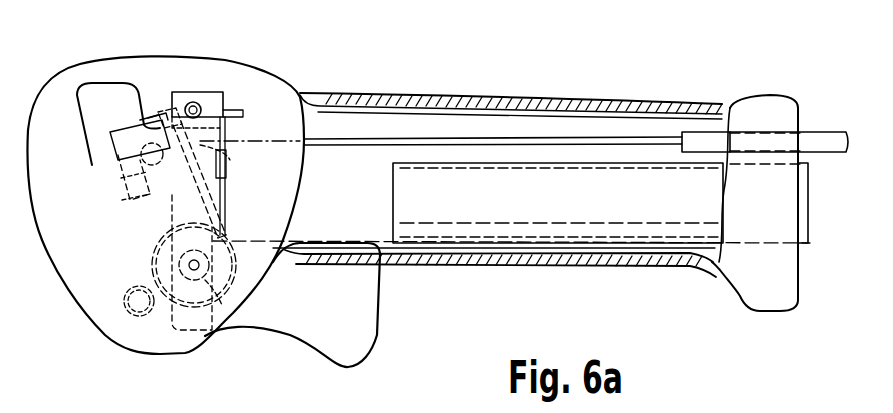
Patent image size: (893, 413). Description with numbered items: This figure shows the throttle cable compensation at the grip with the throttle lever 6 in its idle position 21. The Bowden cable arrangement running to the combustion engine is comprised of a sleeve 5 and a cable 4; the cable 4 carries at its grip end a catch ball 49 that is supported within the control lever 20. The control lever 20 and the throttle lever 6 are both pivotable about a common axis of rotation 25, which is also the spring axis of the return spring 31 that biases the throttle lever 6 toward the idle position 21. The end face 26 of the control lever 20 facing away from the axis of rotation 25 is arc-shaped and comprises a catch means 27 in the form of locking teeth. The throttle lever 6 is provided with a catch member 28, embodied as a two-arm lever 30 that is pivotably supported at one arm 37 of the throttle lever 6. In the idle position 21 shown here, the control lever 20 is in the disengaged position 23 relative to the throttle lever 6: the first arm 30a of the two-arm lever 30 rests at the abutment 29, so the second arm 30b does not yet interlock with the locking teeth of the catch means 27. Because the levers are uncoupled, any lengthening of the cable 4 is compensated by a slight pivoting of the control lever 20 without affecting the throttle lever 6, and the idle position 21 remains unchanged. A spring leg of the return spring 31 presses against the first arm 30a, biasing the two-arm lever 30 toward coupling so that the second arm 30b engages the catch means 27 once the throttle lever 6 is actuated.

The cable 4 is at (559, 138).
The sleeve 5 is at (817, 132).
The throttle lever 6 is at (348, 322).
The control lever 20 is at (152, 210).
The idle position 21 is at (366, 353).
The disengaged position 23 is at (150, 118).
The axis of rotation 25 is at (205, 272).
The end face 26 is at (153, 100).
The catch means 27 is at (137, 132).
The catch member 28 is at (213, 104).
The abutment 29 is at (227, 166).
The two-arm lever 30 is at (238, 108).
The first arm 30a is at (217, 190).
The second arm 30b is at (160, 110).
The return spring 31 is at (235, 278).
The arm 37 is at (195, 97).
The catch ball 49 is at (140, 167).